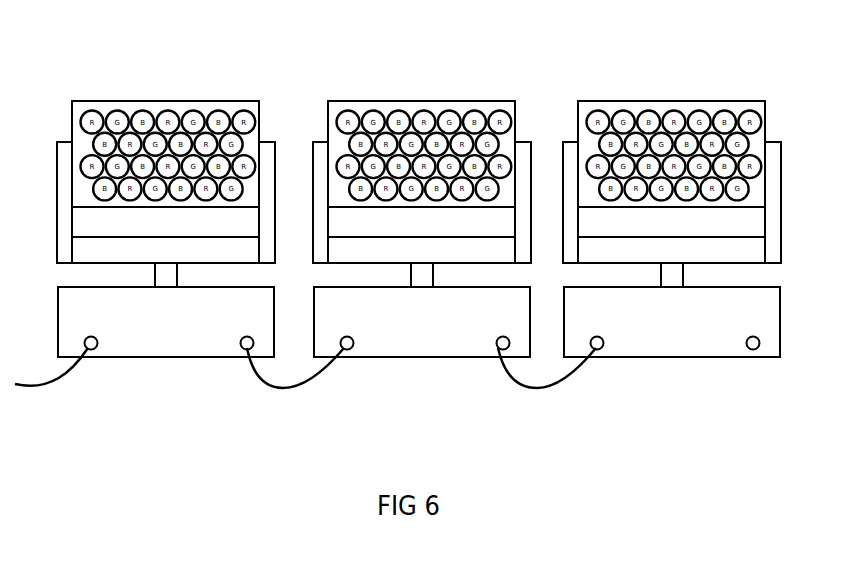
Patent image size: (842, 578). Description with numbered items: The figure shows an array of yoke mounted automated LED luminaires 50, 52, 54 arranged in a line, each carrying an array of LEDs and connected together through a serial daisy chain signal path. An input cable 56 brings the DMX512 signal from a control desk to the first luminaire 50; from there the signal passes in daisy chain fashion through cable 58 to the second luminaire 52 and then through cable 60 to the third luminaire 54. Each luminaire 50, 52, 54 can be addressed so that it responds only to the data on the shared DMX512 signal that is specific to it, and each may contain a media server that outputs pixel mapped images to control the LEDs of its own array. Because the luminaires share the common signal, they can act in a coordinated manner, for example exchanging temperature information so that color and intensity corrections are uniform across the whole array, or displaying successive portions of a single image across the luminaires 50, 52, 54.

The automated LED luminaire 50 is at (166, 187).
The automated LED luminaire 52 is at (419, 187).
The automated LED luminaire 54 is at (669, 187).
The input cable 56 is at (60, 381).
The cable 58 is at (310, 383).
The cable 60 is at (562, 383).